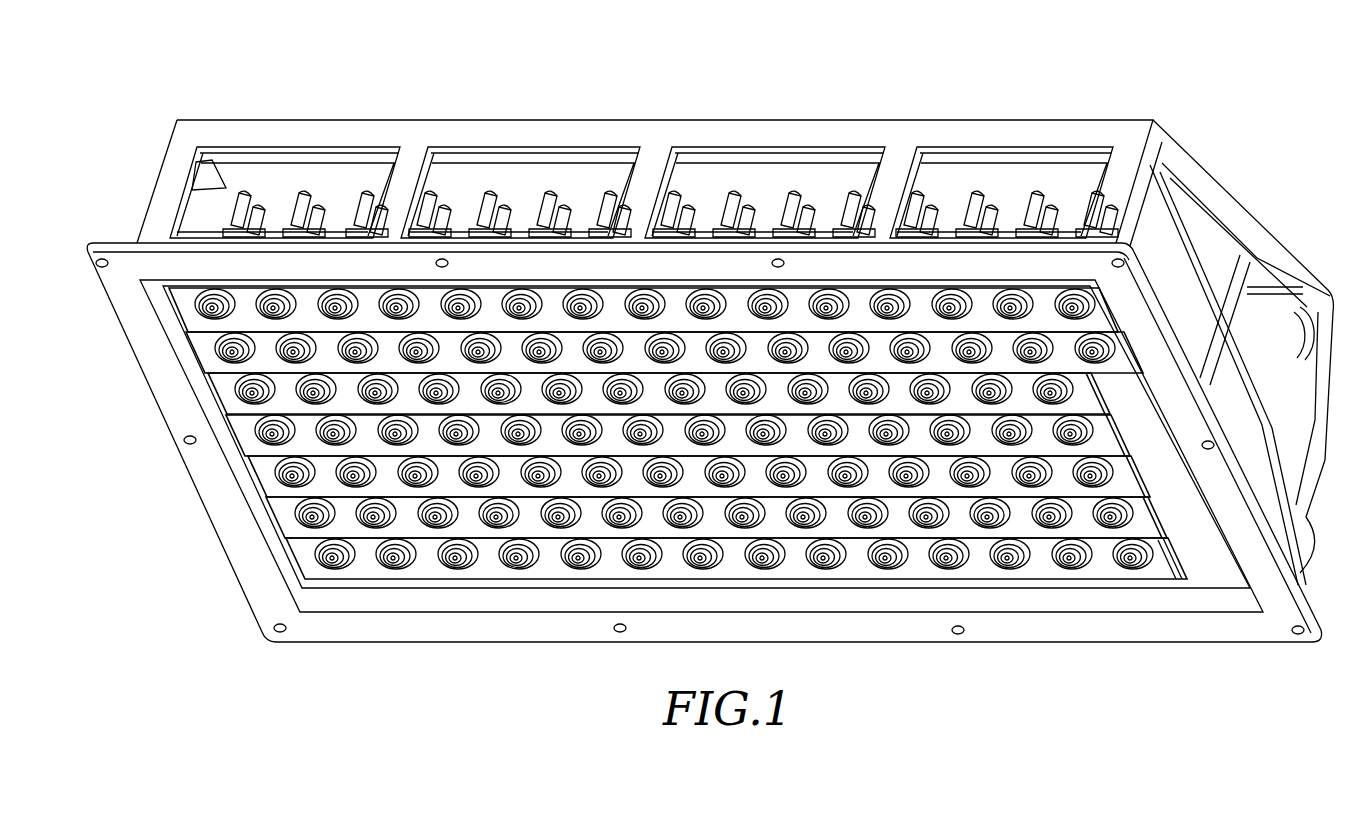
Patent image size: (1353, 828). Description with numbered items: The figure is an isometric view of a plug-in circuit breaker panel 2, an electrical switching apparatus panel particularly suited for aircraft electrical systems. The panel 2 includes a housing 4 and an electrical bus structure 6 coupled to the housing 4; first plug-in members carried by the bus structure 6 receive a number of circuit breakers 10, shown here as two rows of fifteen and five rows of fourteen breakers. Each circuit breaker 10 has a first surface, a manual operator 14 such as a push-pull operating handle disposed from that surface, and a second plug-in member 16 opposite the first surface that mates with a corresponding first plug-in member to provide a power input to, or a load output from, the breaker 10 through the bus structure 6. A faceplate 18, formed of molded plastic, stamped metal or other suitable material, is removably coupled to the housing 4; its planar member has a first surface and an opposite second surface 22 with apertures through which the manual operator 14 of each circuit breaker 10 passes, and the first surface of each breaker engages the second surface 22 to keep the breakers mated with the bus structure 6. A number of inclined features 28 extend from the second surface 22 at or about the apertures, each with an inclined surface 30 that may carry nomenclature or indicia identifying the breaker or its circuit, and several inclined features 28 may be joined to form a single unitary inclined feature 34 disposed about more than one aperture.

The plug-in circuit breaker panel 2 is at (138, 124).
The housing 4 is at (1158, 140).
The electrical bus structure 6 is at (950, 178).
The circuit breaker 10 is at (708, 230).
The manual operator 14 is at (620, 287).
The second plug-in member 16 is at (742, 217).
The faceplate 18 is at (1210, 542).
The opposite second surface 22 is at (1176, 480).
The inclined feature 28 is at (1045, 545).
The inclined surface 30 is at (1067, 533).
The single unitary inclined feature 34 is at (413, 527).